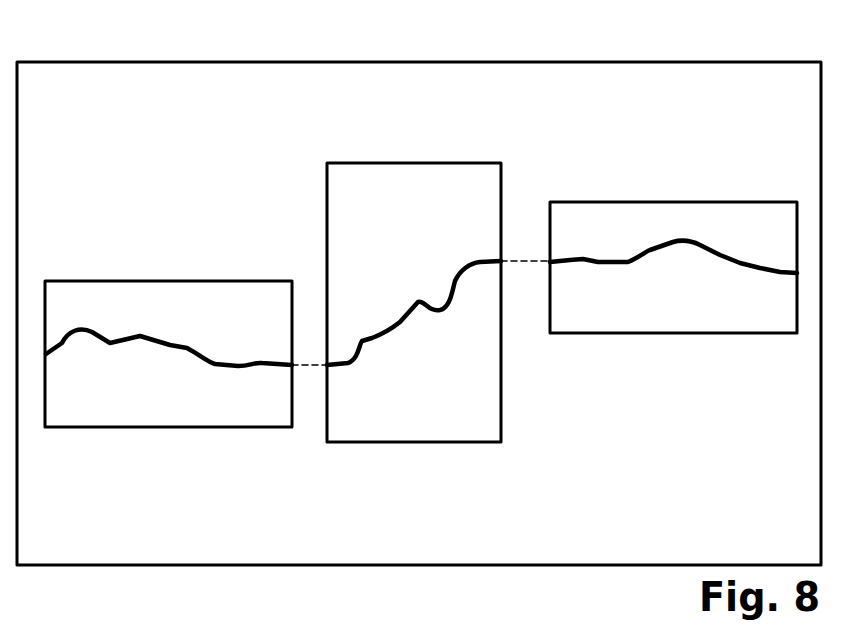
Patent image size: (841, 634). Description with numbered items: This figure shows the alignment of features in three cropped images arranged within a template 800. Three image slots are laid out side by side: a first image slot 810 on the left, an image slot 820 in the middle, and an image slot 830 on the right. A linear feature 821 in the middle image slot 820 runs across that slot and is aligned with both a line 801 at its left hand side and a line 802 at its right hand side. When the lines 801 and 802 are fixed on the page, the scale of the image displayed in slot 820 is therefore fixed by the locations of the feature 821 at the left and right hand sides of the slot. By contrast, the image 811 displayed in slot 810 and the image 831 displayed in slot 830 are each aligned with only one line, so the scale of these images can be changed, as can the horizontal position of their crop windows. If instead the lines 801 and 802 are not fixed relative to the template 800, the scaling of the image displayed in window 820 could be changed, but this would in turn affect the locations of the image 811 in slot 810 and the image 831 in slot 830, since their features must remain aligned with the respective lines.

The template 800 is at (414, 61).
The image slot 810 is at (155, 280).
The image 811 is at (163, 348).
The line 801 is at (303, 363).
The image slot 820 is at (414, 162).
The linear feature 821 is at (402, 327).
The line 802 is at (522, 258).
The image slot 830 is at (672, 201).
The image 831 is at (647, 254).